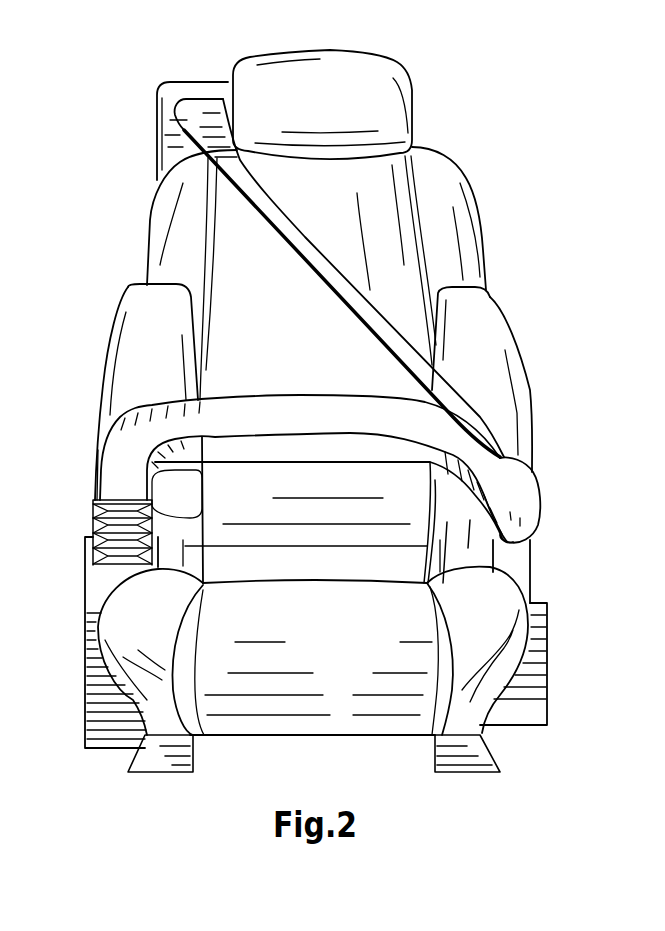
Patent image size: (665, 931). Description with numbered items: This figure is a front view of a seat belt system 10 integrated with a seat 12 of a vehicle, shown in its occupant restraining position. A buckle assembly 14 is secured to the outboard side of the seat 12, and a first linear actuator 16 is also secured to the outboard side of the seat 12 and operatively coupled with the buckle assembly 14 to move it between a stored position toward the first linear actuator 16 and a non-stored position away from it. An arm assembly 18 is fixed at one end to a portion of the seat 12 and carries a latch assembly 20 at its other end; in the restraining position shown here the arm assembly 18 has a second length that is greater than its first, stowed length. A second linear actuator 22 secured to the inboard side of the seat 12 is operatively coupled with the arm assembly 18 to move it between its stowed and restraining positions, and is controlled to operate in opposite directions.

The seat belt system 10 is at (318, 394).
The seat 12 is at (350, 90).
The buckle assembly 14 is at (525, 583).
The first linear actuator 16 is at (517, 708).
The arm assembly 18 is at (293, 413).
The latch assembly 20 is at (520, 508).
The second linear actuator 22 is at (107, 682).